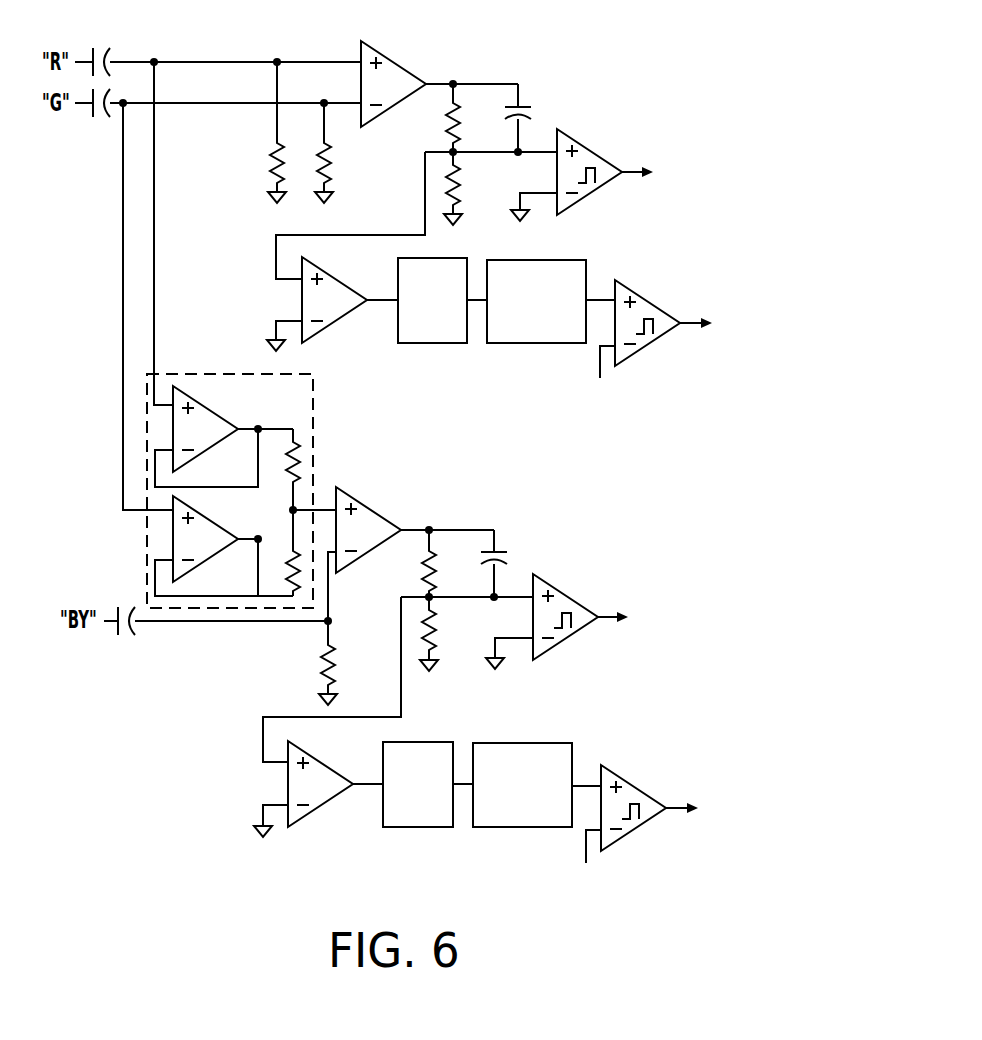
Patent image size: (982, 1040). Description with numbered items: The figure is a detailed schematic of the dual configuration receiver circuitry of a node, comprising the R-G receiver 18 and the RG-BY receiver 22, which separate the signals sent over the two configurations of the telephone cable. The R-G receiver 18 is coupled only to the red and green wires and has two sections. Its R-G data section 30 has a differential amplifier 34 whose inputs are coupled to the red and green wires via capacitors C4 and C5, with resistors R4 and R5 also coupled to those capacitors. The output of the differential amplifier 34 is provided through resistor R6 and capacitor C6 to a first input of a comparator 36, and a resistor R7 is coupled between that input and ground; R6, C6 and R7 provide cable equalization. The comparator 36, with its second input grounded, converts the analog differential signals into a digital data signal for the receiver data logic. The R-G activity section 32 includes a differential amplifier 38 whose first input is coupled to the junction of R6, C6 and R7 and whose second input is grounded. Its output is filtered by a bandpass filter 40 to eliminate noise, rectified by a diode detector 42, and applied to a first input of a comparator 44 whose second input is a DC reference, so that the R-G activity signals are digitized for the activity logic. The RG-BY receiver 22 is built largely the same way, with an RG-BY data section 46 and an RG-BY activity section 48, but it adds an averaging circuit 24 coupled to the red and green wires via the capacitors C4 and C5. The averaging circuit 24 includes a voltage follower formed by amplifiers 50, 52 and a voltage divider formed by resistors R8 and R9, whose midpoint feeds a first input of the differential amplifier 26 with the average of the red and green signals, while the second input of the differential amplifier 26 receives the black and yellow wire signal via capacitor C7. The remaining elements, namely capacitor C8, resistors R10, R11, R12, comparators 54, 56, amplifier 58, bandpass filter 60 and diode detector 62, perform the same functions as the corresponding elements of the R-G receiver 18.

The R-G receiver 18 is at (778, 15).
The RG-BY receiver 22 is at (778, 455).
The averaging circuit 24 is at (313, 420).
The differential amplifier 26 is at (364, 505).
The R-G data section 30 is at (606, 70).
The R-G activity section 32 is at (705, 245).
The differential amplifier 34 is at (390, 59).
The comparator 36 is at (584, 147).
The differential amplifier 38 is at (319, 268).
The bandpass filter 40 is at (440, 258).
The diode detector 42 is at (548, 260).
The comparator 44 is at (646, 300).
The RG-BY data section 46 is at (672, 522).
The RG-BY activity section 48 is at (672, 724).
The amplifier 50 is at (201, 405).
The amplifier 52 is at (208, 518).
The comparator 54 is at (560, 592).
The comparator 56 is at (633, 786).
The amplifier 58 is at (309, 755).
The bandpass filter 60 is at (432, 742).
The diode detector 62 is at (531, 743).
The capacitor C4 is at (218, 55).
The capacitor C5 is at (218, 96).
The capacitor C6 is at (528, 119).
The capacitor C7 is at (216, 604).
The capacitor C8 is at (504, 562).
The resistor R4 is at (264, 130).
The resistor R5 is at (312, 151).
The resistor R6 is at (464, 118).
The resistor R7 is at (463, 188).
The resistor R8 is at (305, 471).
The resistor R9 is at (291, 553).
The resistor R10 is at (344, 661).
The resistor R11 is at (446, 563).
The resistor R12 is at (445, 634).